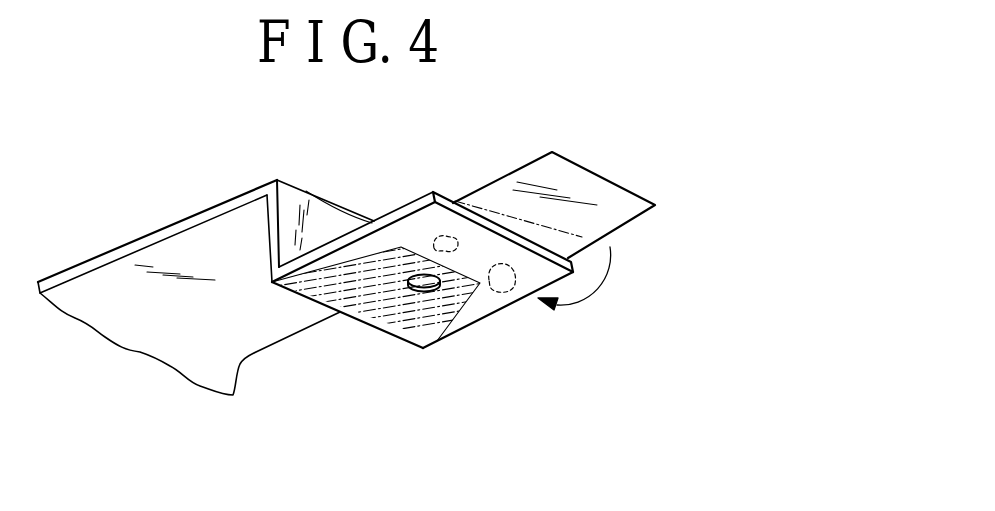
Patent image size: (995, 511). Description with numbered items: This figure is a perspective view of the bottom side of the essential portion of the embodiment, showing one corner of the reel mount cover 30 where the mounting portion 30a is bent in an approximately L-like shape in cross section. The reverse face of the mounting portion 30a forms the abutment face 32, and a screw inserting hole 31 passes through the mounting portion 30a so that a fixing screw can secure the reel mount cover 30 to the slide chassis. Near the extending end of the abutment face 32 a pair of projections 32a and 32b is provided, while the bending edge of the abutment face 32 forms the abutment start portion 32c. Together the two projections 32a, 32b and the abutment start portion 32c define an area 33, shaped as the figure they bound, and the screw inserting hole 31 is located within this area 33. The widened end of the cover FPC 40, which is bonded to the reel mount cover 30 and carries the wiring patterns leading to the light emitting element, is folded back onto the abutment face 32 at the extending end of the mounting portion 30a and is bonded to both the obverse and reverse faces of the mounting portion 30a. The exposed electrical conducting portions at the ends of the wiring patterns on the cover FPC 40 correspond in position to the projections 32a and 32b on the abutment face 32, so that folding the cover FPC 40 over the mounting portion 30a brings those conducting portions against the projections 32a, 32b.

The reel mount cover 30 is at (160, 228).
The mounting portion 30a is at (353, 237).
The screw inserting hole 31 is at (427, 290).
The abutment face 32 is at (487, 305).
The projection 32a is at (520, 296).
The projection 32b is at (447, 237).
The abutment start portion 32c is at (382, 333).
The area 33 is at (357, 322).
The cover FPC 40 is at (527, 162).